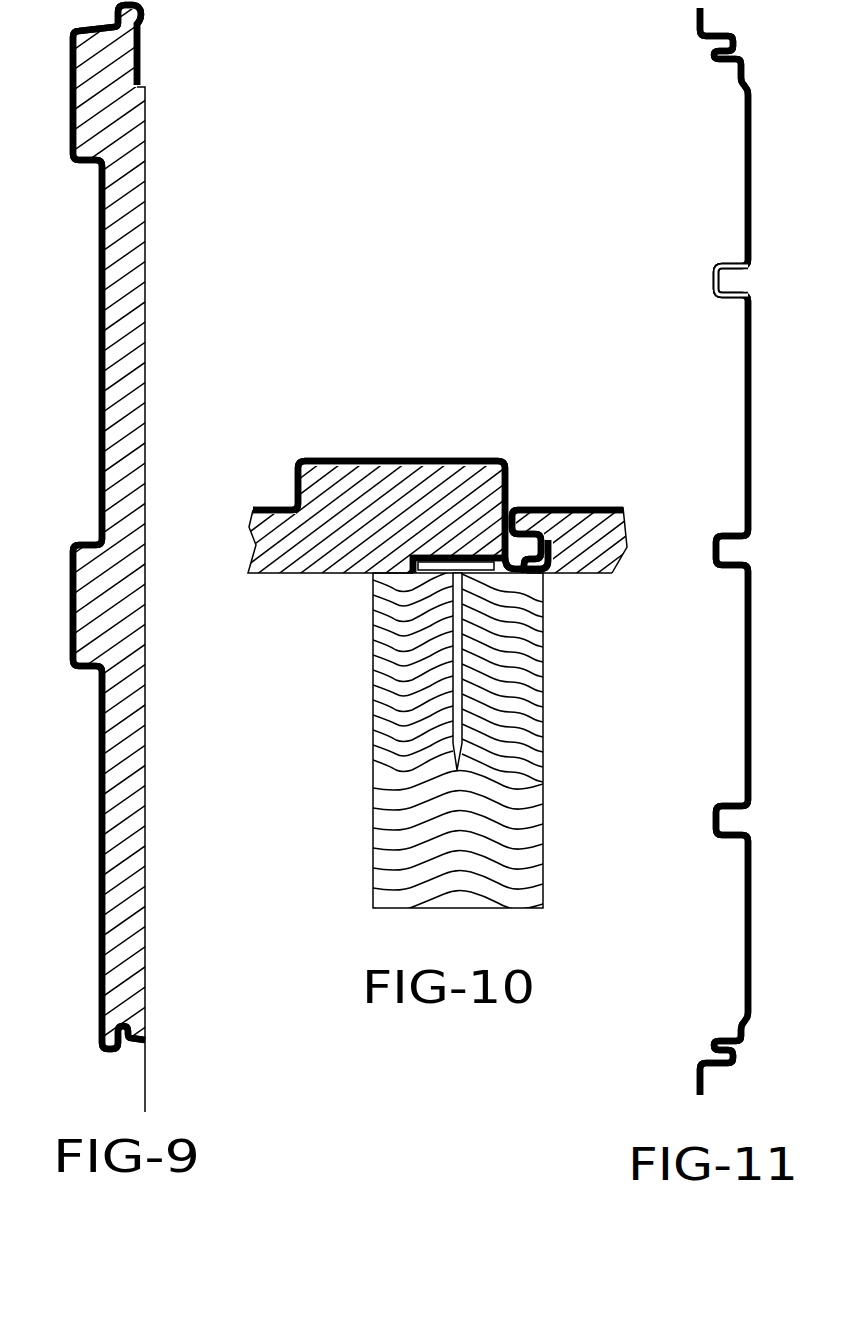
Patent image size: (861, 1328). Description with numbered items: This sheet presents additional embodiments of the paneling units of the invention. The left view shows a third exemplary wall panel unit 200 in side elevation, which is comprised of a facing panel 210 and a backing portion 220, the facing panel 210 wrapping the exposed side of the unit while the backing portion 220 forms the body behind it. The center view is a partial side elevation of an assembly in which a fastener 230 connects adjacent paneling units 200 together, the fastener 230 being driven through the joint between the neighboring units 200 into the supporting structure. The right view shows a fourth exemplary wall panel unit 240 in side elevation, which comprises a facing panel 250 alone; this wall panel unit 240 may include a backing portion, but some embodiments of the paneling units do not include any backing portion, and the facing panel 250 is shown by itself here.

In FIG. 9, the wall panel unit 200 is at (152, 562).
In FIG. 10, the wall panel unit 200 is at (401, 457).
In FIG. 9, the facing panel 210 is at (99, 229).
In FIG. 9, the backing portion 220 is at (123, 303).
In FIG. 10, the fastener 230 is at (457, 705).
In FIG. 11, the wall panel unit 240 is at (670, 551).
In FIG. 11, the facing panel 250 is at (714, 278).